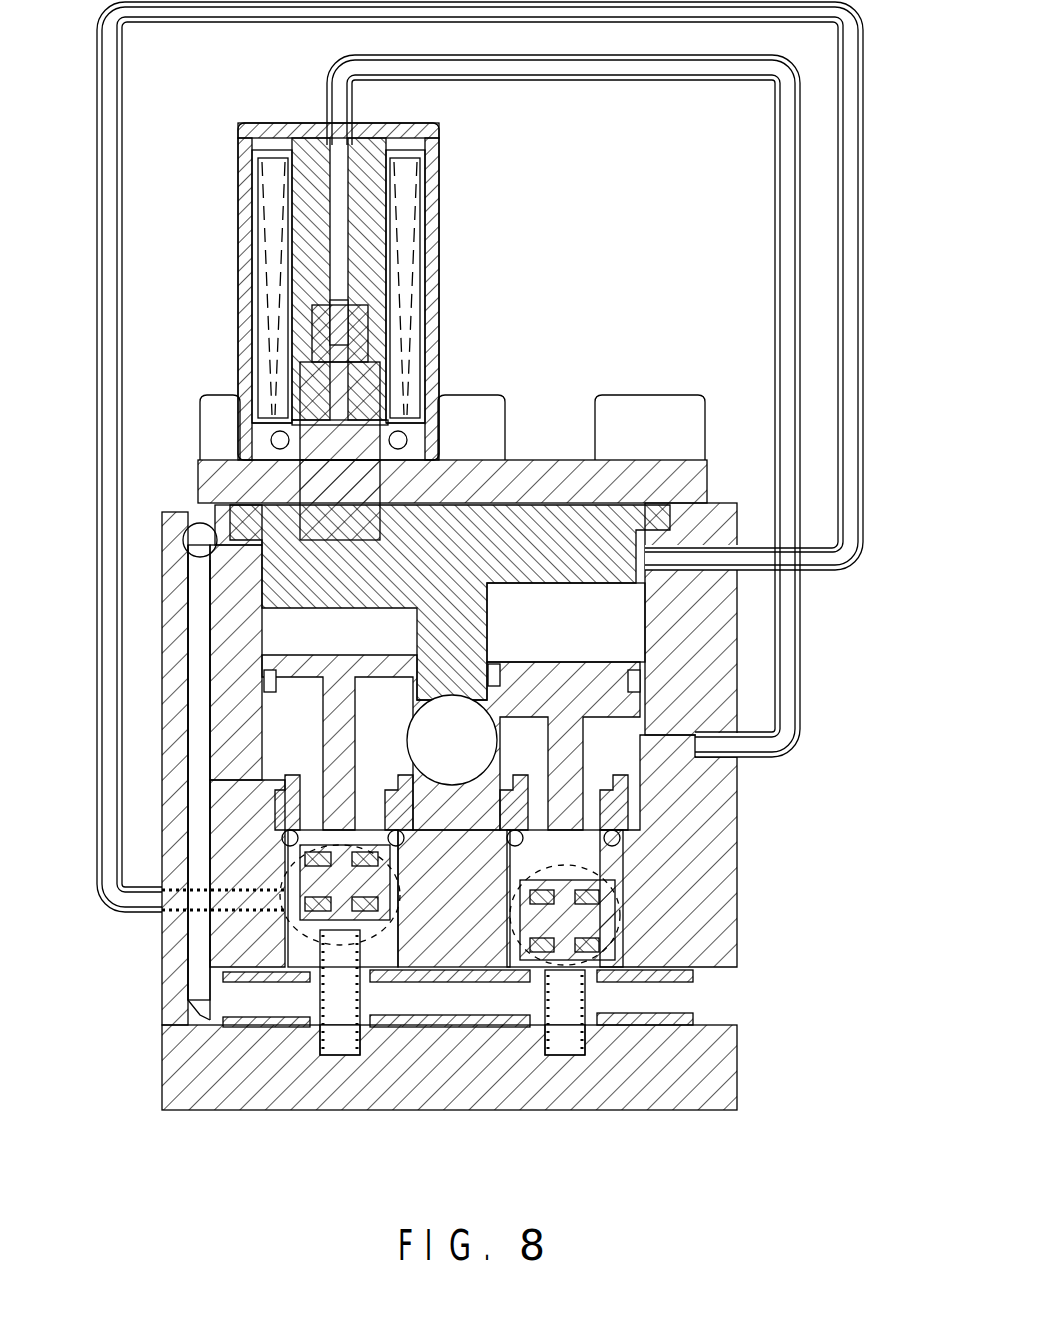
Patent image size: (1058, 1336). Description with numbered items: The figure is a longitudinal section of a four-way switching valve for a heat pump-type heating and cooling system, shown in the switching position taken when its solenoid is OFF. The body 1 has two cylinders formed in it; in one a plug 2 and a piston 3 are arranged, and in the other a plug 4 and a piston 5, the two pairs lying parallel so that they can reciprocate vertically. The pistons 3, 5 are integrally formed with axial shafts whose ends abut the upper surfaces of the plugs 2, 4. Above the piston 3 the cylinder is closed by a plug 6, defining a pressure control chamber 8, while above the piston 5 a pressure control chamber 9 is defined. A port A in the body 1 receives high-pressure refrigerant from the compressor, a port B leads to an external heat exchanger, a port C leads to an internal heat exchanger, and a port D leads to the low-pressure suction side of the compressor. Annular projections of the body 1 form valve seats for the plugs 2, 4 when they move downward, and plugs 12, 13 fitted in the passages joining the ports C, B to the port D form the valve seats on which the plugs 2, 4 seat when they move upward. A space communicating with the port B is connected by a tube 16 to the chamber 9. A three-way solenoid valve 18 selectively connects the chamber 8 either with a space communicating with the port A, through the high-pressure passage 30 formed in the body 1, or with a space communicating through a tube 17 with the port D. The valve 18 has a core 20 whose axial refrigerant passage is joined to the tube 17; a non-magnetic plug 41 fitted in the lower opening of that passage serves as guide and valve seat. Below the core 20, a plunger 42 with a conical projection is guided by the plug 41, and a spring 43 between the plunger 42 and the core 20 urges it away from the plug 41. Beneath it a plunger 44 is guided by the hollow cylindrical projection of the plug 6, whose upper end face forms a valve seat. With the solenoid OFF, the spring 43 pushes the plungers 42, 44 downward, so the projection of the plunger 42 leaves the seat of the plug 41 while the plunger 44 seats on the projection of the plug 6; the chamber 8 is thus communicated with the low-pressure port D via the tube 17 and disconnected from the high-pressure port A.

The body 1 is at (745, 840).
The plug 2 is at (333, 935).
The piston 3 is at (262, 668).
The plug 4 is at (562, 972).
The piston 5 is at (630, 710).
The plug 6 is at (258, 505).
The pressure control chamber 8 is at (262, 612).
The pressure control chamber 9 is at (620, 606).
The plug 12 is at (282, 800).
The plug 13 is at (636, 795).
The tube 16 is at (122, 212).
The tube 17 is at (802, 672).
The three-way solenoid valve 18 is at (462, 139).
The core 20 is at (372, 200).
The high-pressure passage 30 is at (198, 730).
The plug 41 is at (385, 303).
The plunger 42 is at (365, 400).
The spring 43 is at (303, 352).
The plunger 44 is at (372, 438).
The port A is at (740, 987).
The port B is at (290, 940).
The port C is at (620, 870).
The port D is at (452, 740).